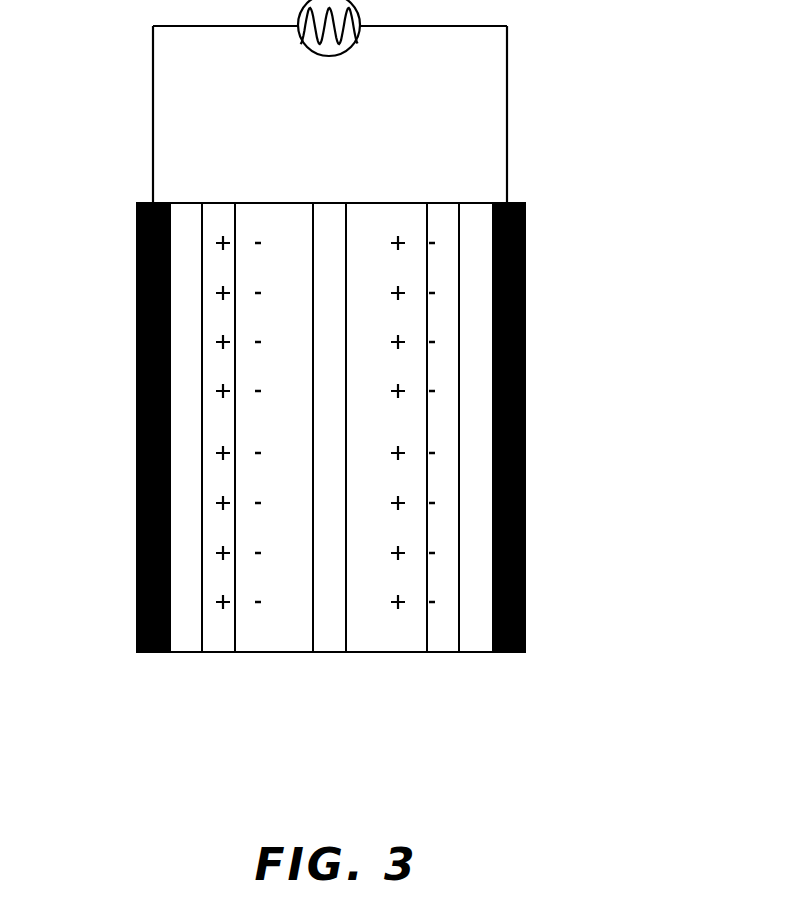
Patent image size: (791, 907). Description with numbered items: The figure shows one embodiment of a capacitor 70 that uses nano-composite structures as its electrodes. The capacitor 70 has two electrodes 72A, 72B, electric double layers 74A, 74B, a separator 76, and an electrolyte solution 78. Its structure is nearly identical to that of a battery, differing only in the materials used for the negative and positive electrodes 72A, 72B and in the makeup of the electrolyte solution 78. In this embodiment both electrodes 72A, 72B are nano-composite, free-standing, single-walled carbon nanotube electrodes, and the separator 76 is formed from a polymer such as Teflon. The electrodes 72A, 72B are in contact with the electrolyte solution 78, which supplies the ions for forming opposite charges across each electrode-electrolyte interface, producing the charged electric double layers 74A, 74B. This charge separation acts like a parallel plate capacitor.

The capacitor 70 is at (357, 385).
The electrode 72A is at (526, 427).
The electrode 72B is at (136, 427).
The electric double layer 74A is at (428, 660).
The electric double layer 74B is at (232, 660).
The separator 76 is at (332, 215).
The electrolyte solution 78 is at (275, 215).